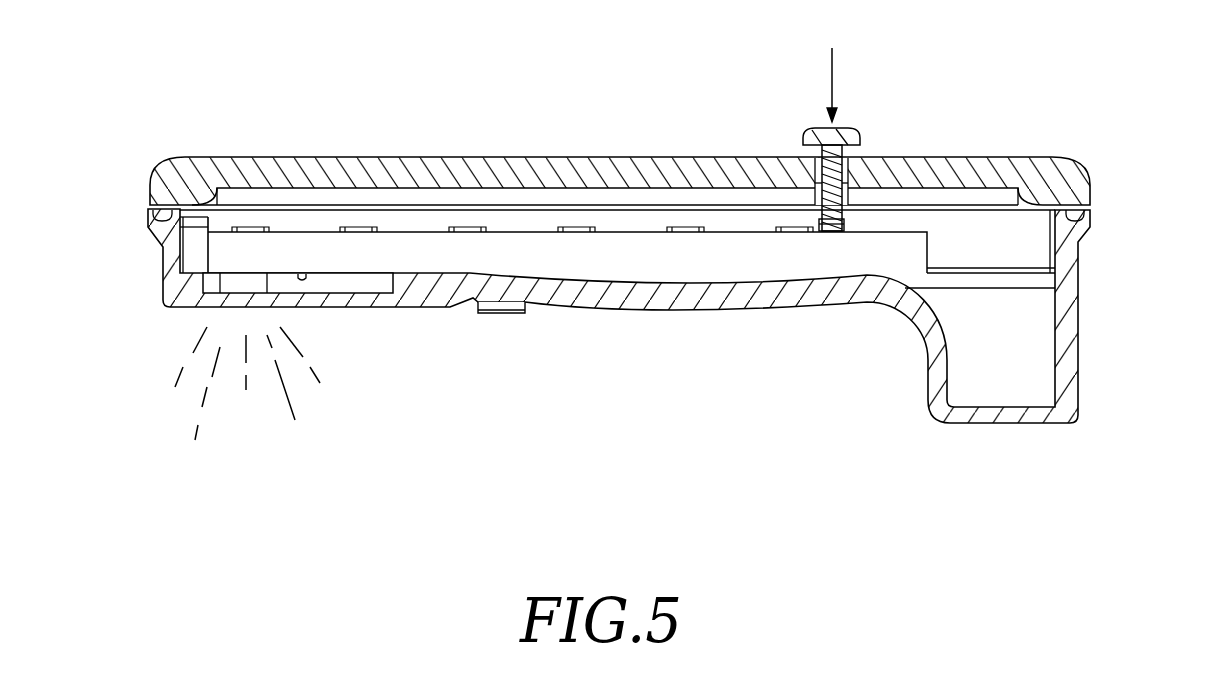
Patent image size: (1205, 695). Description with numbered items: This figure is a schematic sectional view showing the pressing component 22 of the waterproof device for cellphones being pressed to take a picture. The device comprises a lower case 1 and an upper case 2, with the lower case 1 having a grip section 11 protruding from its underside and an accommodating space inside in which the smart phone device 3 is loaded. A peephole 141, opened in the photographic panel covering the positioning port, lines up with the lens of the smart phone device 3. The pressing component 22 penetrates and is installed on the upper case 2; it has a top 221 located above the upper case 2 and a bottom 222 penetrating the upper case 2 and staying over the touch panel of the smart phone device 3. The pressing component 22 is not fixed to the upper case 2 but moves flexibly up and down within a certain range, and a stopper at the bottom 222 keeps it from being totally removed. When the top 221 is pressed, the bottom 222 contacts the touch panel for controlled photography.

The lower case 1 is at (167, 270).
The upper case 2 is at (232, 157).
The smart phone device 3 is at (885, 252).
The grip section 11 is at (1078, 347).
The pressing component 22 is at (713, 122).
The peephole 141 is at (250, 283).
The top 221 is at (817, 133).
The bottom 222 is at (817, 208).